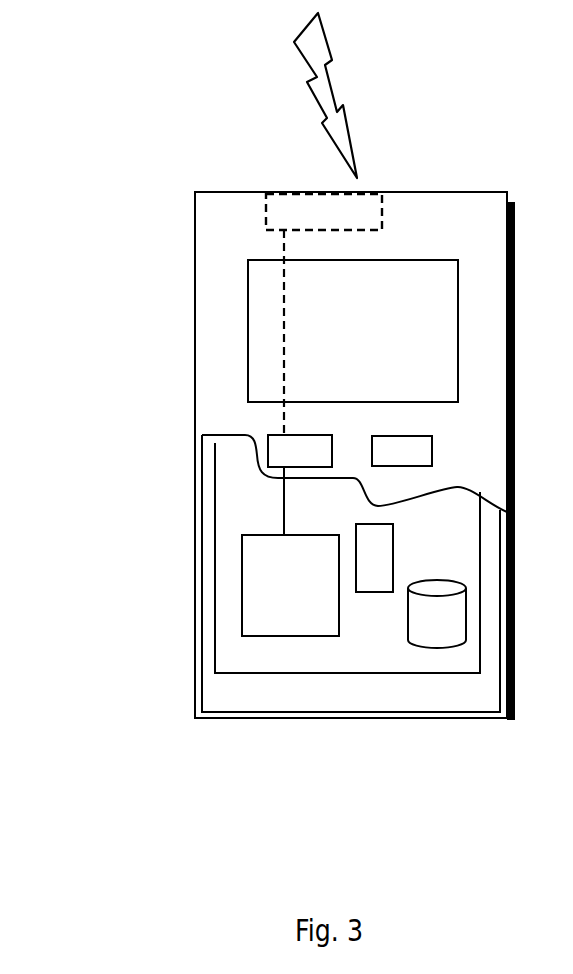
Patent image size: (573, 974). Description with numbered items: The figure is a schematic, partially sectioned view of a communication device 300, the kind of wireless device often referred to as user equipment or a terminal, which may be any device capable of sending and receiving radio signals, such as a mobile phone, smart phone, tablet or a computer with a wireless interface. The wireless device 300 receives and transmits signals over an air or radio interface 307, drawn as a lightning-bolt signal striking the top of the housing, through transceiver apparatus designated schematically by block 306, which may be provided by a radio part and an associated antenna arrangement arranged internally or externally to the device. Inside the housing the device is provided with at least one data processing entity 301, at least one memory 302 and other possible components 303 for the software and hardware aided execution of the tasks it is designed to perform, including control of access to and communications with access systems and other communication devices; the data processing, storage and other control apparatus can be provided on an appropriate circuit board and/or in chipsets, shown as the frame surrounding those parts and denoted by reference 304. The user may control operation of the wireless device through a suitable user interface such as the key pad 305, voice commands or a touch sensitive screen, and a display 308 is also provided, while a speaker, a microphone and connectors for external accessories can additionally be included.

The communication device 300 is at (195, 235).
The data processing entity 301 is at (248, 567).
The memory 302 is at (432, 627).
The other possible components 303 is at (373, 542).
The circuit board 304 is at (240, 655).
The key pad 305 is at (267, 457).
The transceiver apparatus 306 is at (370, 205).
The air or radio interface 307 is at (362, 114).
The display 308 is at (265, 317).